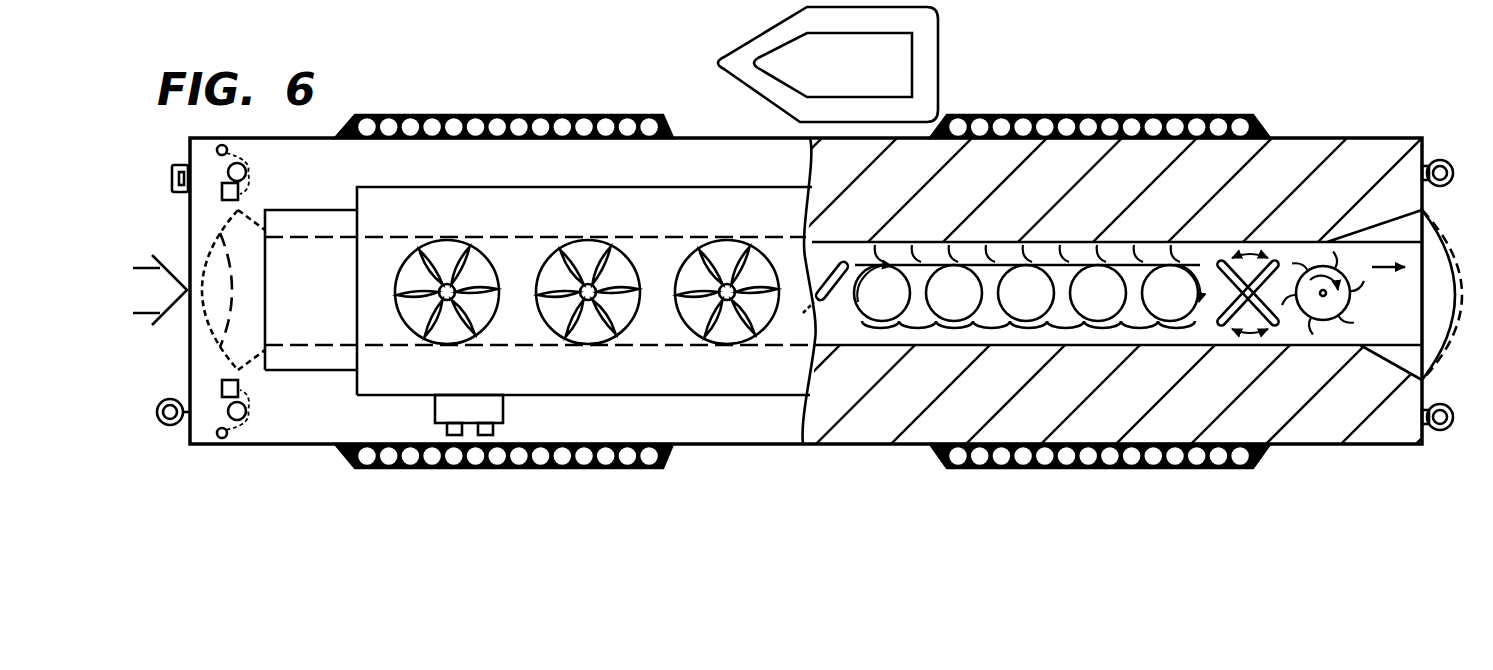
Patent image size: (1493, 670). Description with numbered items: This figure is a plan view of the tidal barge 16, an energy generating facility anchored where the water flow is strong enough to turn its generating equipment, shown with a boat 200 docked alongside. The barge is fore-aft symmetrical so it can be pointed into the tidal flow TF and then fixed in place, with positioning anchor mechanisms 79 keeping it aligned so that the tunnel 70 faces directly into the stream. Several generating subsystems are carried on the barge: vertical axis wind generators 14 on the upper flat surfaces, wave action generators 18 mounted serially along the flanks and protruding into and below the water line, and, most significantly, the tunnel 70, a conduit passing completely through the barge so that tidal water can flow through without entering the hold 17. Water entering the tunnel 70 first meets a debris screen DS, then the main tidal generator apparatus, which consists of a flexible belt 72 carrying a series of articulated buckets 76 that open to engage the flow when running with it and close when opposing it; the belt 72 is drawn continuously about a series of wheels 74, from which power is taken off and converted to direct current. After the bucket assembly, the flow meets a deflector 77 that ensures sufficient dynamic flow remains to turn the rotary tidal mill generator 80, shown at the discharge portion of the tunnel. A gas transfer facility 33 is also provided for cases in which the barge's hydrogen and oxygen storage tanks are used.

The vertical axis wind generator 14 is at (558, 270).
The tidal barge 16 is at (712, 129).
The hold 17 is at (1064, 206).
The wave action generator 18 is at (517, 118).
The gas transfer facility 33 is at (475, 408).
The tunnel 70 is at (893, 213).
The flexible belt 72 is at (1120, 245).
The wheel 74 is at (896, 304).
The bucket 76 is at (1030, 240).
The deflector 77 is at (822, 268).
The positioning anchor mechanism 79 is at (245, 168).
The rotary tidal mill generator 80 is at (1328, 308).
The boat 200 is at (920, 60).
The tidal flow TF is at (160, 290).
The debris screen DS is at (1455, 362).